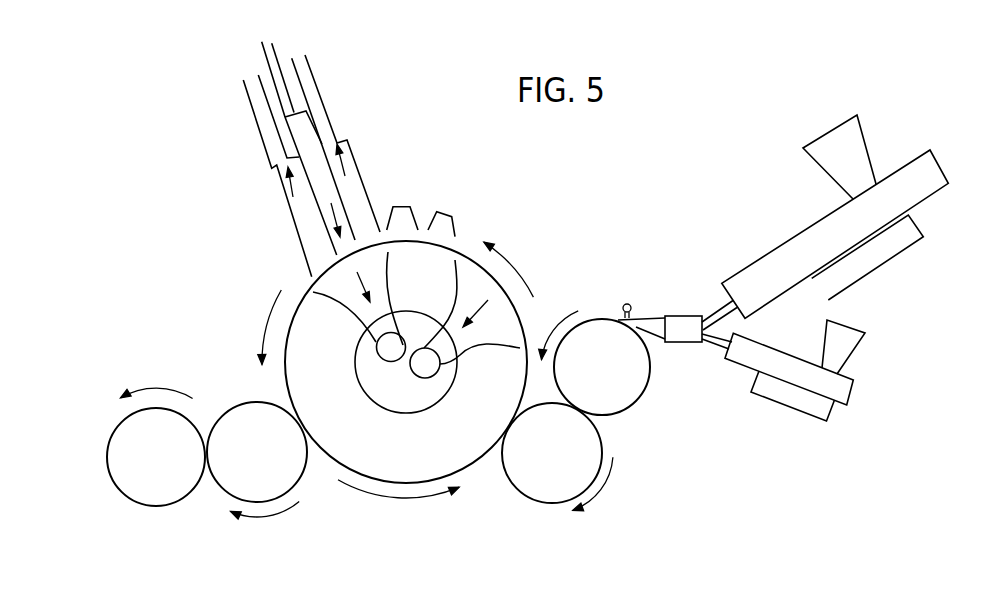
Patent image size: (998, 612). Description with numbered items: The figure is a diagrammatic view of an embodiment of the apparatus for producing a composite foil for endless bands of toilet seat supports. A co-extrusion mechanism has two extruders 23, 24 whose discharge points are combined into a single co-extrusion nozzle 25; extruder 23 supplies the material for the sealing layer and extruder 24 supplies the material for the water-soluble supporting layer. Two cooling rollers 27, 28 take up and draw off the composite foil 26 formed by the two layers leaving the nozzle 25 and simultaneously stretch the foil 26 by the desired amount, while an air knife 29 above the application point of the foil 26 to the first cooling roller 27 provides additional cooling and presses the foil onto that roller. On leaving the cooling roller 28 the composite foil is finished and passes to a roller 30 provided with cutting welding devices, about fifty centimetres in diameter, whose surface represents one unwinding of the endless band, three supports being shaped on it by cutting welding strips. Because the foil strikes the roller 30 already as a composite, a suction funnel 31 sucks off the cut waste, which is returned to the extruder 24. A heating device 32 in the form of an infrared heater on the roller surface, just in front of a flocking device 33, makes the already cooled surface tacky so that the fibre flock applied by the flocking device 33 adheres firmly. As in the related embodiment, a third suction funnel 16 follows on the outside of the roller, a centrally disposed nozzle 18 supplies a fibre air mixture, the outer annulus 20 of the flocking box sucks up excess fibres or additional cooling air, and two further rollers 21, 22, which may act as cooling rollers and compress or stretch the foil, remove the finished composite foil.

The third suction funnel 16 is at (342, 302).
The nozzle 18 is at (313, 183).
The outer annulus 20 is at (312, 238).
The roller 21 is at (228, 493).
The roller 22 is at (145, 507).
The extruder 23 is at (809, 373).
The extruder 24 is at (847, 216).
The co-extrusion nozzle 25 is at (677, 315).
The foil 26 is at (638, 320).
The first cooling roller 27 is at (638, 385).
The cooling roller 28 is at (547, 492).
The air knife 29 is at (623, 304).
The roller 30 is at (467, 457).
The suction funnel 31 is at (487, 345).
The heating device 32 is at (452, 217).
The flocking device 33 is at (290, 222).